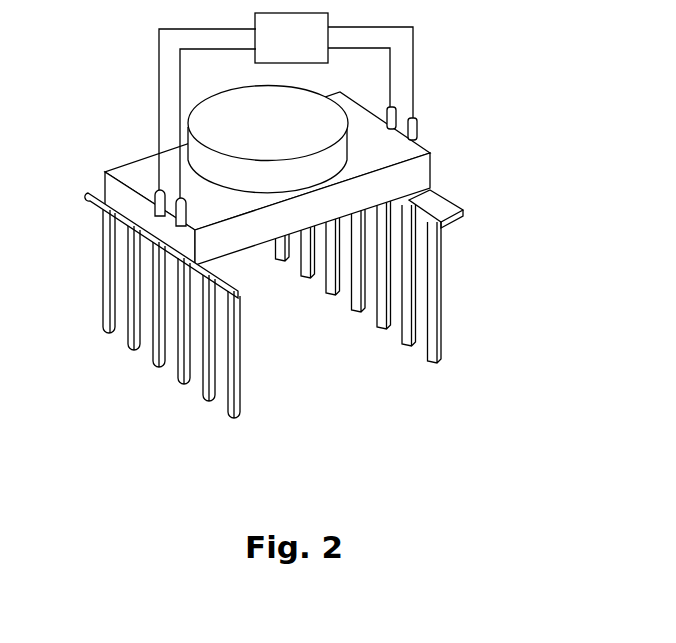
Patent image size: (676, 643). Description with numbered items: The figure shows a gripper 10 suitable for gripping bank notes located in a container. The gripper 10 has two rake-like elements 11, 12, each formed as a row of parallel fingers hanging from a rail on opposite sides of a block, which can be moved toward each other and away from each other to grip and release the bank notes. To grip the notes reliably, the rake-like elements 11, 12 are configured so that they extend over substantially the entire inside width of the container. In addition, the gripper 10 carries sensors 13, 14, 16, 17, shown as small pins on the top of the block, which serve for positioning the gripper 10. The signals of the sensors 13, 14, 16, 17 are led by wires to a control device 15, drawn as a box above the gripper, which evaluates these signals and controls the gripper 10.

The gripper 10 is at (495, 152).
The rake-like element 11 is at (442, 327).
The rake-like element 12 is at (104, 322).
The sensor 13 is at (420, 128).
The sensor 14 is at (387, 109).
The control device 15 is at (322, 25).
The sensor 16 is at (155, 209).
The sensor 17 is at (187, 209).